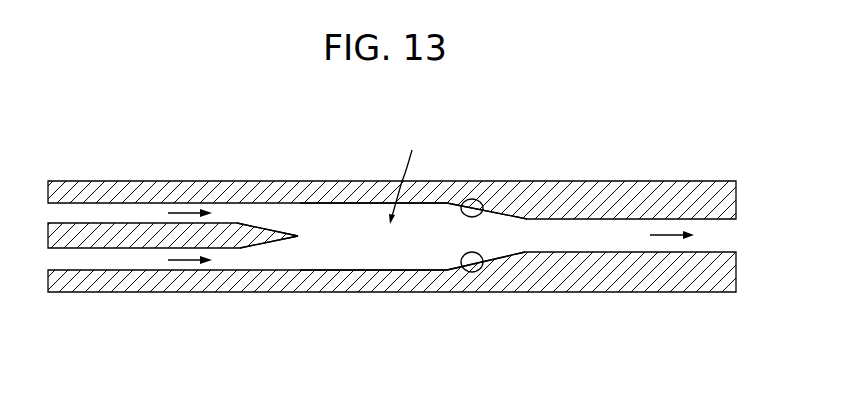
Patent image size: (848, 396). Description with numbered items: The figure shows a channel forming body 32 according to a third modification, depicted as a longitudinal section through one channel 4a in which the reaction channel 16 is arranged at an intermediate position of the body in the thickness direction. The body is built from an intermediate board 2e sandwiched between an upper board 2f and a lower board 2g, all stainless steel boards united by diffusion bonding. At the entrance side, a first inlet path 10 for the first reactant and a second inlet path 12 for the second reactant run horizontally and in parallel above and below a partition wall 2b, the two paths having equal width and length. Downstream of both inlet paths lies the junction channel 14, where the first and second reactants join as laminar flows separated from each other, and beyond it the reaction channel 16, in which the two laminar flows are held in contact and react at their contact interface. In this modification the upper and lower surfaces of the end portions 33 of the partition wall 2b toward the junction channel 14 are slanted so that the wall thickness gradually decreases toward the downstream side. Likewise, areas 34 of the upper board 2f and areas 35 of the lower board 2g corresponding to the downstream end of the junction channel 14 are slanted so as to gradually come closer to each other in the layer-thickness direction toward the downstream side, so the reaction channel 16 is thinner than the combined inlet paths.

The channel forming body 32 is at (160, 155).
The first inlet path 10 is at (82, 215).
The second inlet path 12 is at (93, 258).
The partition wall 2b is at (173, 298).
The intermediate board 2e is at (157, 238).
The end portions of the partition walls 33 is at (260, 238).
The junction channel 14 is at (358, 238).
The channel 4a is at (406, 174).
The areas of the upper board 34 is at (470, 202).
The areas of the lower board 35 is at (470, 254).
The upper board 2f is at (562, 181).
The lower board 2g is at (620, 292).
The reaction channel 16 is at (620, 235).